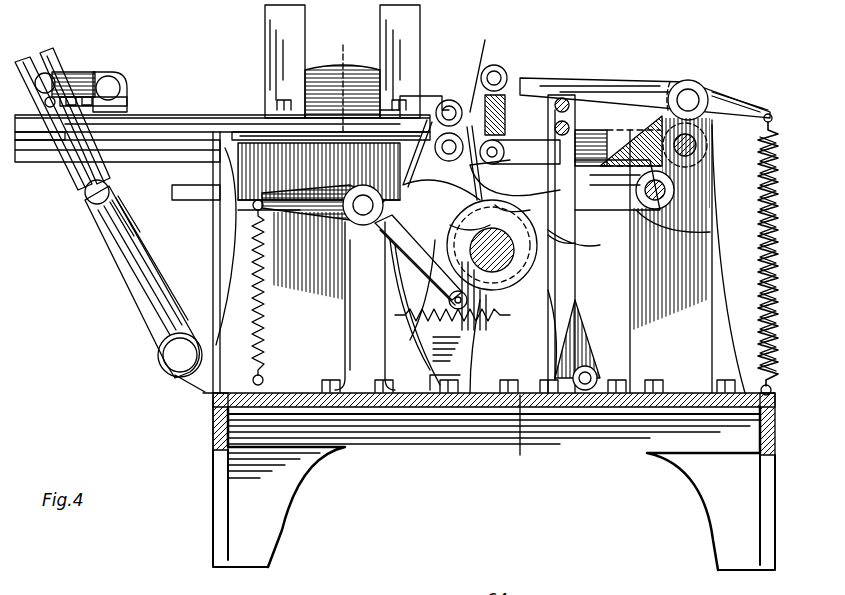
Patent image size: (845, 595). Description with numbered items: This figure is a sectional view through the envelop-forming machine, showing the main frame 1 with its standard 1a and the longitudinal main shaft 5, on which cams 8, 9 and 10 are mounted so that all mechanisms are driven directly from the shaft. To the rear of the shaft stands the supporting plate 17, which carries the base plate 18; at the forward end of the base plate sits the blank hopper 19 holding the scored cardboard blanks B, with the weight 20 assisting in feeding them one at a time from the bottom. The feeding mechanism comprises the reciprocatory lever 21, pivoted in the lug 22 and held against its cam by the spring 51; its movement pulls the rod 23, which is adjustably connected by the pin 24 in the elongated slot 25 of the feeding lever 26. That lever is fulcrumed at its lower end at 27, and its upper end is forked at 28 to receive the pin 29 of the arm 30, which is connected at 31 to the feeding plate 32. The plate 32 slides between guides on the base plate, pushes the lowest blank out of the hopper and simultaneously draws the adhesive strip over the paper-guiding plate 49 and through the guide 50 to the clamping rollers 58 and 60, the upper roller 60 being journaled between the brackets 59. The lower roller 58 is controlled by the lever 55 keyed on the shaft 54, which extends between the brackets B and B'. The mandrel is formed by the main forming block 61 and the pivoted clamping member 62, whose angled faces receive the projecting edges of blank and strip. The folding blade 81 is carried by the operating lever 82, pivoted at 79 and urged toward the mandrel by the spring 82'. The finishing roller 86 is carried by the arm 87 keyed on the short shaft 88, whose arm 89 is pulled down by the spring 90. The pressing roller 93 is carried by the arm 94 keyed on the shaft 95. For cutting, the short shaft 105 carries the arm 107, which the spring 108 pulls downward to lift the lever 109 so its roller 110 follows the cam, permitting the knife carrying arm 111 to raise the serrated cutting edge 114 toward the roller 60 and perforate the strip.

The main frame 1 is at (412, 448).
The frame standard 1a is at (319, 221).
The main shaft 5 is at (493, 292).
The cam 8 is at (560, 225).
The cam 9 is at (530, 258).
The cam 10 is at (342, 79).
The supporting plate 17 is at (222, 410).
The base plate 18 is at (182, 118).
The blank hopper 19 is at (408, 48).
The weight 20 is at (322, 66).
The reciprocatory lever 21 is at (588, 332).
The lug 22 is at (600, 372).
The rod 23 is at (174, 192).
The pin 24 is at (88, 199).
The elongated slot 25 is at (118, 218).
The blank-and-adhesive-strip-feeding lever 26 is at (148, 300).
The fulcrum 27 is at (200, 393).
The fork 28 is at (47, 52).
The pin 29 is at (62, 70).
The arm 30 is at (88, 75).
The connection 31 is at (122, 86).
The blank-and-adhesive-strip-feeding plate 32 is at (54, 150).
The paper-guiding plate 49 is at (140, 268).
The guide 50 is at (250, 134).
The spring 51 is at (368, 185).
The shaft 54 is at (666, 190).
The lever 55 is at (700, 233).
The lower clamping roller 58 is at (455, 152).
The brackets 59 is at (420, 95).
The upper roller 60 is at (450, 99).
The main forming block 61 is at (500, 140).
The flat-engaging-and-clamping member 62 is at (500, 95).
The pivot 79 is at (520, 402).
The folding blade 81 is at (536, 105).
The operating lever 82 is at (627, 92).
The spring 82' is at (584, 263).
The finishing roller 86 is at (495, 68).
The arm 87 is at (642, 86).
The short shaft 88 is at (690, 88).
The arm 89 is at (736, 106).
The spring 90 is at (775, 122).
The roller 93 is at (561, 96).
The arm 94 is at (588, 132).
The shaft 95 is at (698, 140).
The short shaft 105 is at (350, 214).
The rearwardly extending arm 107 is at (176, 360).
The spring 108 is at (214, 396).
The lever 109 is at (428, 262).
The roller 110 is at (380, 430).
The knife carrying arm 111 is at (362, 226).
The cutting edge 114 is at (472, 110).
The blank B is at (252, 68).
The bracket B' is at (715, 259).